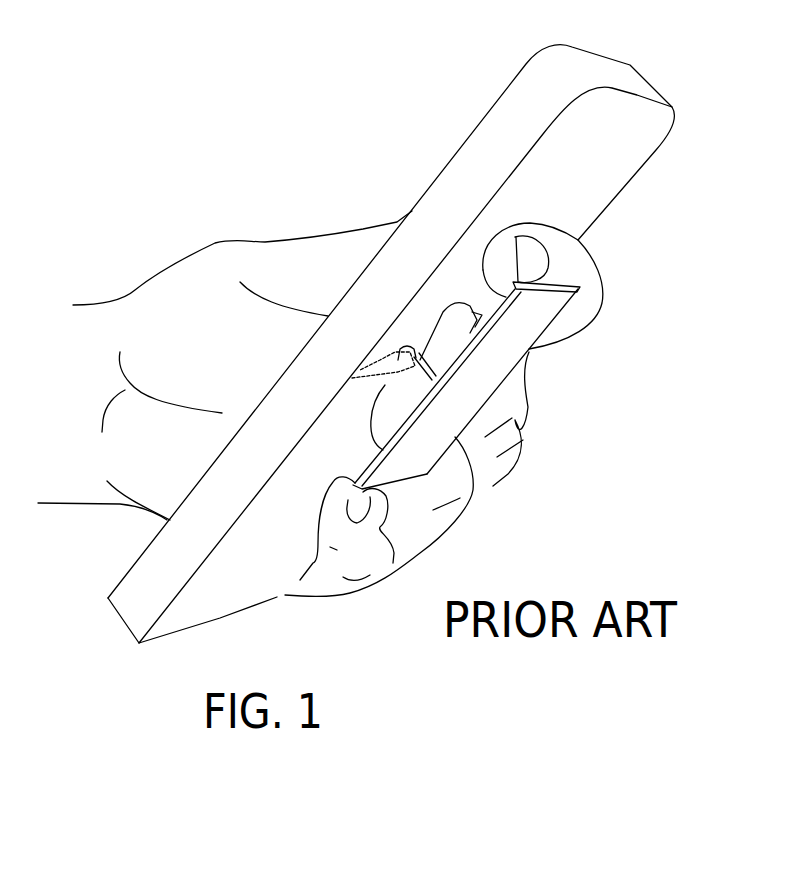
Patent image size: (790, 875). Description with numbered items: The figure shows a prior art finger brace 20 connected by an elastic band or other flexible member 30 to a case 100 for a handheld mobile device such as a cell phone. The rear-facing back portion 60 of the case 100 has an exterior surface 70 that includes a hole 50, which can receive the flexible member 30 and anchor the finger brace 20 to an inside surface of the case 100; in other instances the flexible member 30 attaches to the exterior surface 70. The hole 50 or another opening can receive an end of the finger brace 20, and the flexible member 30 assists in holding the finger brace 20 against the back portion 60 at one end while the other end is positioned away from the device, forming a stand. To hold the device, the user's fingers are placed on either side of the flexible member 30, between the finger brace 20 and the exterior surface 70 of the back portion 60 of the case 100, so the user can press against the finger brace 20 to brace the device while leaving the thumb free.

The case 100 is at (467, 137).
The finger brace 20 is at (512, 347).
The flexible member 30 is at (353, 377).
The hole 50 is at (399, 349).
The back portion 60 is at (651, 155).
The exterior surface 70 is at (596, 194).